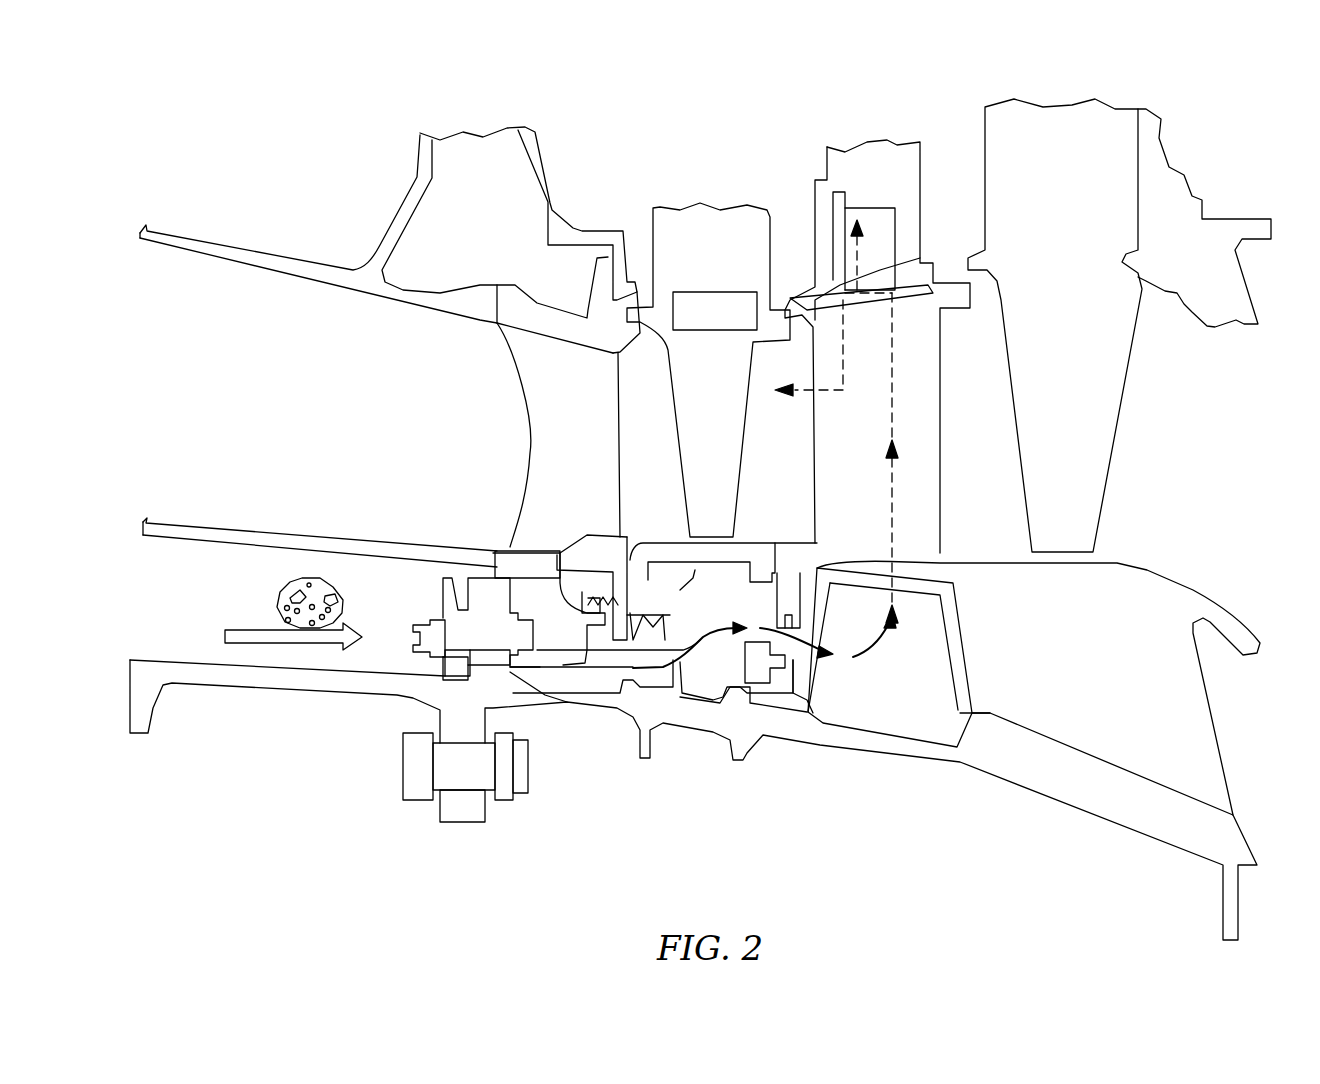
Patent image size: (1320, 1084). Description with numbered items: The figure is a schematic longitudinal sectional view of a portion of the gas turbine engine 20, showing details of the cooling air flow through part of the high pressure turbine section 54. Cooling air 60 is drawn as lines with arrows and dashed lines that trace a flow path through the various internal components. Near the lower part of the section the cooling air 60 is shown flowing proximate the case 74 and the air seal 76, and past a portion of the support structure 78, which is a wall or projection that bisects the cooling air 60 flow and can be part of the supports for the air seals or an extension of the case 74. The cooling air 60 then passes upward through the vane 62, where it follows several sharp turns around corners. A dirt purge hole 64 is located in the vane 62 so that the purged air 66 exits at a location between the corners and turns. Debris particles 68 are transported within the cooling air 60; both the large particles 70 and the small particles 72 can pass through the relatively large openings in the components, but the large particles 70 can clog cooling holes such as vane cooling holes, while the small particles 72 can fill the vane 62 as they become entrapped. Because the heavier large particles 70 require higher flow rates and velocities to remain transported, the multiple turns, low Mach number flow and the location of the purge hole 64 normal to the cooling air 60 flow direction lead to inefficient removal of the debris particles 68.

The gas turbine engine 20 is at (330, 118).
The high pressure turbine section 54 is at (808, 131).
The cooling air 60 is at (247, 630).
The vane 62 is at (942, 367).
The dirt purge hole 64 is at (873, 285).
The purged air 66 is at (860, 253).
The debris particles 68 is at (295, 580).
The large particles 70 is at (337, 582).
The small particles 72 is at (308, 577).
The case 74 is at (743, 752).
The air seal 76 is at (762, 553).
The support structure 78 is at (560, 553).